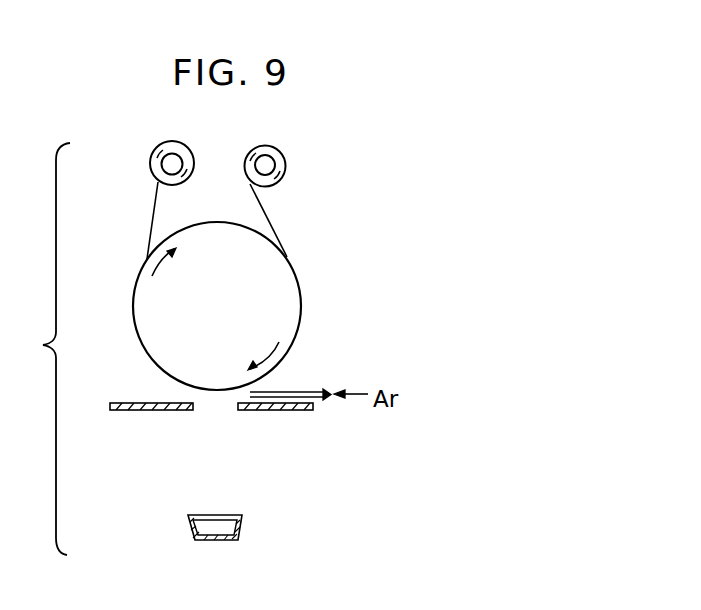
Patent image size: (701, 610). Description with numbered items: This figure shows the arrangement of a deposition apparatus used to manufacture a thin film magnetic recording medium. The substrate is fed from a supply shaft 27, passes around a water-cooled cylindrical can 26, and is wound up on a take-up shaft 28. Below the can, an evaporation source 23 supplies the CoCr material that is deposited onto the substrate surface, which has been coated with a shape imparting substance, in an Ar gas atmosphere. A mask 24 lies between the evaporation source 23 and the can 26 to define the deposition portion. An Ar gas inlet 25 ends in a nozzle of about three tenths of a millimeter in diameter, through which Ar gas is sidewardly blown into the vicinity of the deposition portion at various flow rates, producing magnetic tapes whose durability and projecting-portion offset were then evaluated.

The evaporation source 23 is at (245, 530).
The mask 24 is at (283, 411).
The Ar gas inlet 25 is at (295, 391).
The water-cooled cylindrical can 26 is at (287, 287).
The supply shaft 27 is at (266, 166).
The take-up shaft 28 is at (172, 165).